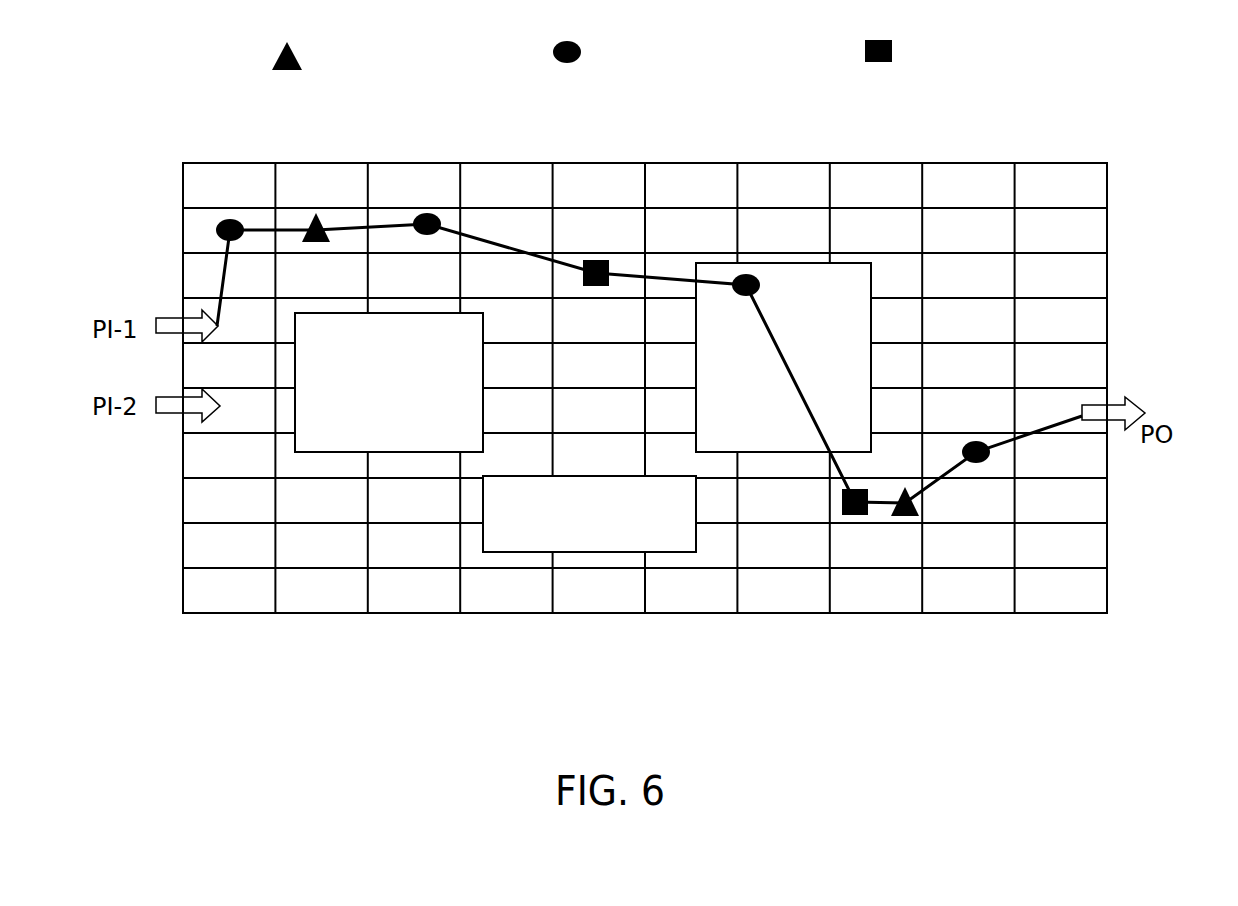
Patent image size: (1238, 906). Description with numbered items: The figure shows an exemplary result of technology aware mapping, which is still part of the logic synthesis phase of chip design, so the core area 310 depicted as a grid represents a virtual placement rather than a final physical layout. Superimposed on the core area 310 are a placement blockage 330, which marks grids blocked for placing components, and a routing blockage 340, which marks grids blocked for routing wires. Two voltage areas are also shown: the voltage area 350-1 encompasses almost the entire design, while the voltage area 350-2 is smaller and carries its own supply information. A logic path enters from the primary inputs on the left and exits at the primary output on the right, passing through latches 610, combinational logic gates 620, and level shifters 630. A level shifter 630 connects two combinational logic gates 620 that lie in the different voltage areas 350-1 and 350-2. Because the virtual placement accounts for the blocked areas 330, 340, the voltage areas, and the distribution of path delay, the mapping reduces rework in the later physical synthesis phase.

The core area 310 is at (162, 112).
The placement blockage 330 is at (389, 382).
The routing blockage 340 is at (589, 514).
The voltage area 350-1 is at (506, 185).
The voltage area 350-2 is at (783, 357).
The latch 610 is at (595, 278).
The combinational logic gate 620 is at (603, 251).
The level shifter 630 is at (785, 277).